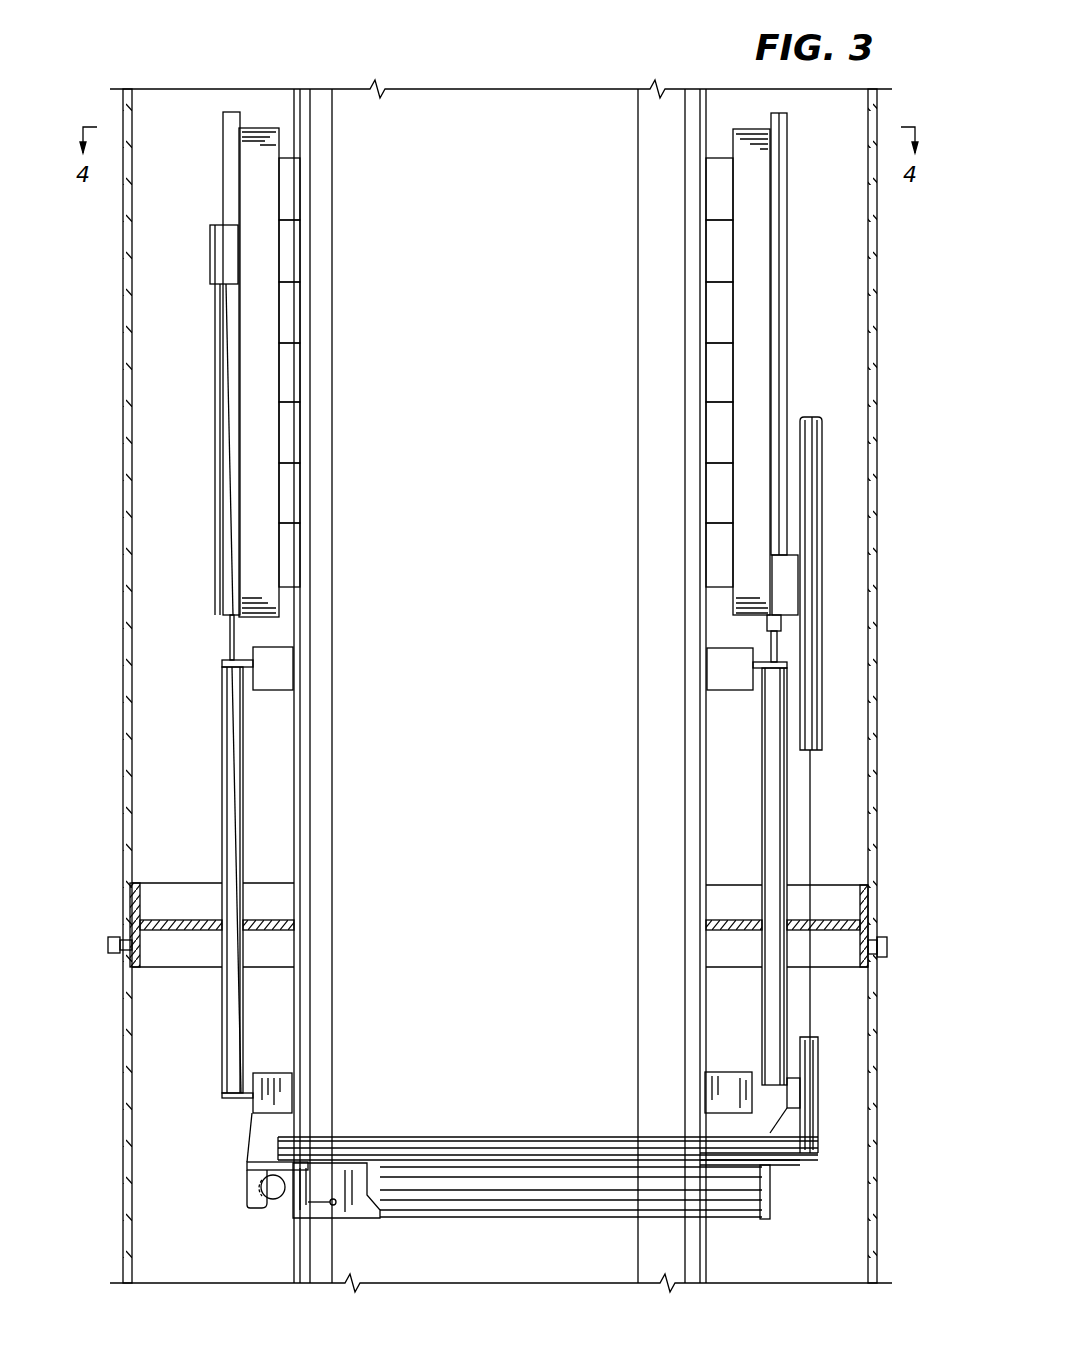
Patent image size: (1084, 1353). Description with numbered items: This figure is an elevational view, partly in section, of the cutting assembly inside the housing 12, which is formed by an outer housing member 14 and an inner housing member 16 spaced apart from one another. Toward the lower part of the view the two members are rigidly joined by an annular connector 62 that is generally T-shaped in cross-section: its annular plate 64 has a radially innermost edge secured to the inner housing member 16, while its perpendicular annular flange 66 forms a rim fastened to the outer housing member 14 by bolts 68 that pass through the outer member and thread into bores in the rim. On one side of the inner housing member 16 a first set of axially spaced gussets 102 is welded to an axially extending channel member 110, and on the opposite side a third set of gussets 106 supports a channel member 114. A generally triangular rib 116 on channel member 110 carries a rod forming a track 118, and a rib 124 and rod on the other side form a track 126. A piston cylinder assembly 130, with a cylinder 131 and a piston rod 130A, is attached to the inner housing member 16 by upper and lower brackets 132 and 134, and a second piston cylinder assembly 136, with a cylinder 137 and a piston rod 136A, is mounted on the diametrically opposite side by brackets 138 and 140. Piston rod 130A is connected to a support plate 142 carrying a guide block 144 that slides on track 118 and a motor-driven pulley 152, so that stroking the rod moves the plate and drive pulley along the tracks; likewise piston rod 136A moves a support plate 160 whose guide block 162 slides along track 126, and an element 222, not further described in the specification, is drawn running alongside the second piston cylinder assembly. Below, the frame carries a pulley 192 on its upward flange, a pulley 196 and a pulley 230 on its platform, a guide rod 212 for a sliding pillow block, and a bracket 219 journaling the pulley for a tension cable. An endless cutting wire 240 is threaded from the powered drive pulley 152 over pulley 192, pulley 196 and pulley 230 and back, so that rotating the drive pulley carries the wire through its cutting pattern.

The housing 12 is at (893, 330).
The outer housing member 14 is at (878, 395).
The inner housing member 16 is at (492, 463).
The annular connector 62 is at (180, 883).
The annular plate 64 is at (833, 920).
The annular flange 66 is at (868, 912).
The bolts 68 is at (115, 948).
The first set of axially spaced gussets 102 is at (717, 182).
The third set of axially spaced gussets 106 is at (290, 425).
The channel member 110 is at (755, 215).
The channel member 114 is at (262, 600).
The rib 116 is at (778, 310).
The track 118 is at (783, 250).
The rib 124 is at (232, 112).
The track 126 is at (226, 196).
The piston cylinder assembly 130 is at (745, 765).
The piston rod 130A is at (775, 640).
The cylinder 131 is at (773, 818).
The upper bracket 132 is at (718, 672).
The lower bracket 134 is at (718, 1090).
The second piston cylinder assembly 136 is at (260, 845).
The piston rod 136A is at (232, 640).
The cylinder 137 is at (232, 793).
The upper bracket 138 is at (275, 672).
The lower bracket 140 is at (277, 1088).
The support plate 142 is at (798, 568).
The guide block 144 is at (783, 595).
The pulley 152 is at (822, 440).
The support plate 160 is at (210, 268).
The guide block 162 is at (232, 248).
The pulley 192 is at (822, 1080).
The pulley 196 is at (785, 1157).
The second guide rod 212 is at (518, 1208).
The bracket 219 is at (262, 1208).
The slanted rod 222 is at (245, 1012).
The pulley 230 is at (385, 1145).
The endless cutting wire 240 is at (540, 1148).